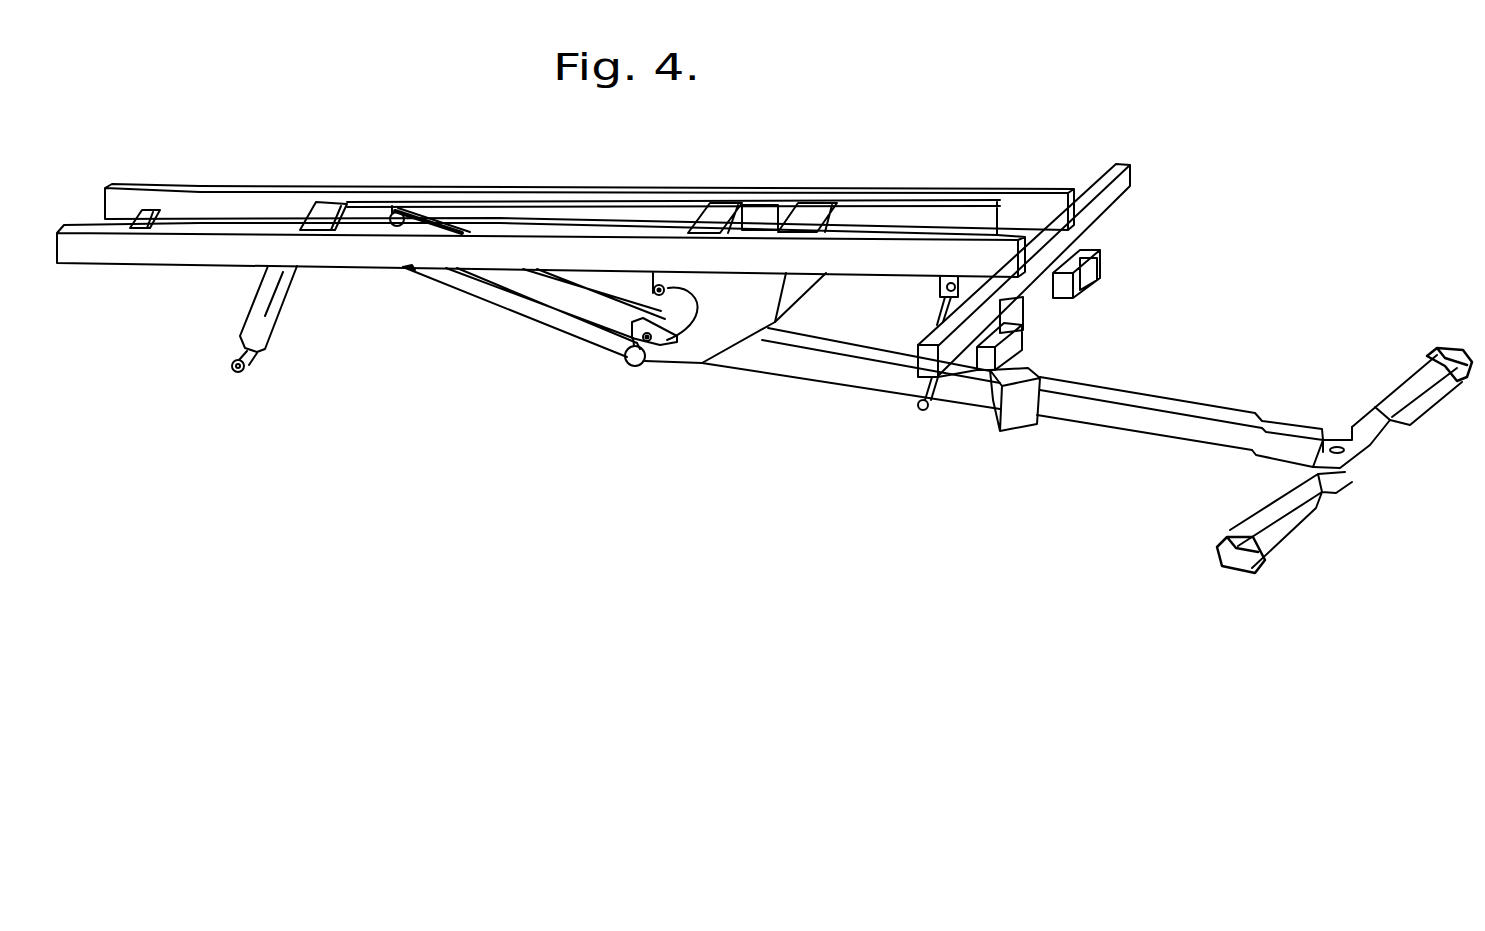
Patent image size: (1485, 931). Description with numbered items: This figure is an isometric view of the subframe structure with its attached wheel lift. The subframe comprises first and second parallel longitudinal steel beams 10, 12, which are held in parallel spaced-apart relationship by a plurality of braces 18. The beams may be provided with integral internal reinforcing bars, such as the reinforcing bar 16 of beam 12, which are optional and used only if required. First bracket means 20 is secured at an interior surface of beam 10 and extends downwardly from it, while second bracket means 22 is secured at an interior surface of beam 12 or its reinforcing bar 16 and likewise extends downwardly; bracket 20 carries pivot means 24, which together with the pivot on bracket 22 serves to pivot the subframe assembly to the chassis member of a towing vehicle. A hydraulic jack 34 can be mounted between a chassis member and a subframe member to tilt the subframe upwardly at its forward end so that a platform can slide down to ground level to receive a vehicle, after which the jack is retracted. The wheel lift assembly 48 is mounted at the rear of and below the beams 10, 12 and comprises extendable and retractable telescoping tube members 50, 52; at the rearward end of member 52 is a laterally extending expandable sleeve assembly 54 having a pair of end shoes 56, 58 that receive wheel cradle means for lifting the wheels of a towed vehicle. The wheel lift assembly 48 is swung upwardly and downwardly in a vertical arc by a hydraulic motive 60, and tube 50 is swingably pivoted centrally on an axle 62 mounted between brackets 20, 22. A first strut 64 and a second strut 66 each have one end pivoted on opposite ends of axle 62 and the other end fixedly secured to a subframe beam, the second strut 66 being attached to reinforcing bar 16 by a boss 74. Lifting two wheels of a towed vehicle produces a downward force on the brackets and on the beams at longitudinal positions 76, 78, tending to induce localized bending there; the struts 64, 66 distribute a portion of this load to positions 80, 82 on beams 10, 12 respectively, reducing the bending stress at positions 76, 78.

The longitudinal steel beam 10 is at (153, 263).
The longitudinal steel beam 12 is at (233, 186).
The internal reinforcing bar 16 is at (560, 210).
The braces 18 is at (152, 208).
The first bracket means 20 is at (700, 348).
The second bracket means 22 is at (804, 276).
The pivot means 24 is at (682, 290).
The hydraulic jack 34 is at (264, 301).
The wheel lift assembly 48 is at (1023, 432).
The telescoping tube member 50 is at (843, 384).
The telescoping tube member 52 is at (1161, 402).
The expandable sleeve assembly 54 is at (1358, 480).
The end shoe 56 is at (1231, 560).
The end shoe 58 is at (1438, 350).
The hydraulic motive 60 is at (917, 378).
The axle 62 is at (628, 364).
The first strut 64 is at (541, 315).
The second strut 66 is at (598, 291).
The boss 74 is at (391, 210).
The longitudinal position 76 is at (738, 262).
The longitudinal position 78 is at (768, 208).
The position 80 is at (401, 255).
The position 82 is at (417, 198).